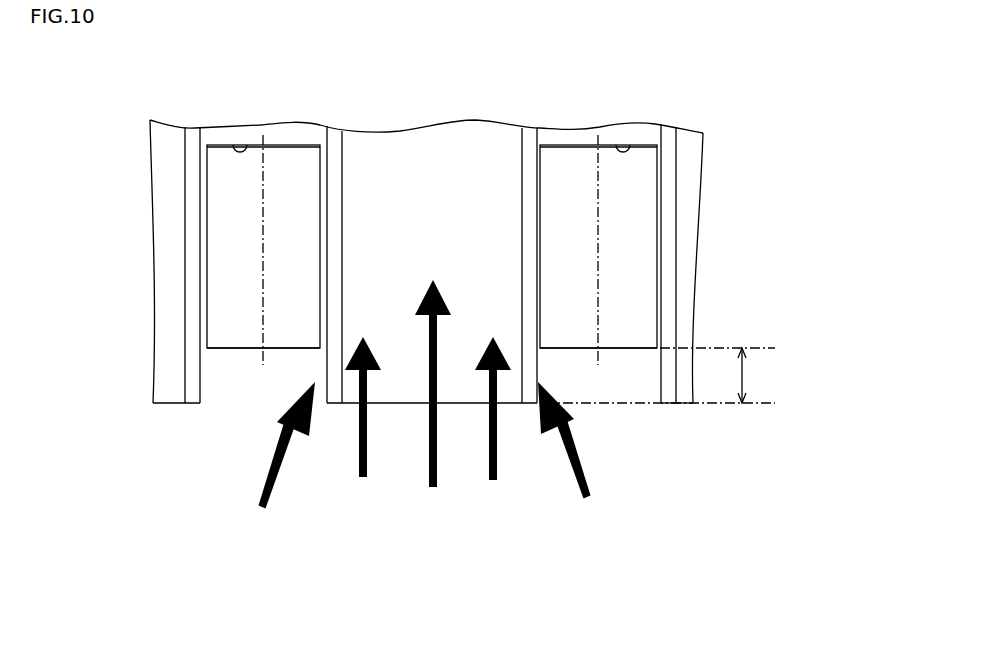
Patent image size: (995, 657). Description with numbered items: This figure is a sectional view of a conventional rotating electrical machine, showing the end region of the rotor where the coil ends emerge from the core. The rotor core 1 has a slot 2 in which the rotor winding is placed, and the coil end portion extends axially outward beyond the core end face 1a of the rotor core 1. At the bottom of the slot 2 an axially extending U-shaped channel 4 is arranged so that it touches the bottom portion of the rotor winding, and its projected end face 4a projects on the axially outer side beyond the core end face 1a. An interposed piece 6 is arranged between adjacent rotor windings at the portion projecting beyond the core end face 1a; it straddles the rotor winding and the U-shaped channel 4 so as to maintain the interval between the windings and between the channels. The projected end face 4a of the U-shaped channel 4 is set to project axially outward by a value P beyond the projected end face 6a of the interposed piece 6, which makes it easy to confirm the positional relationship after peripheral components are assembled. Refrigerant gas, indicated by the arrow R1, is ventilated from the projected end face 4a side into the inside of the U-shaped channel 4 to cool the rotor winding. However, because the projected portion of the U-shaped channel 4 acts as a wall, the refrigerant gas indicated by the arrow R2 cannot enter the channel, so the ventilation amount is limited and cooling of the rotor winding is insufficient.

The rotor core 1 is at (580, 130).
The core end face 1a is at (252, 138).
The slot 2 is at (195, 128).
The U-shaped channel 4 is at (157, 314).
The projected end face 4a is at (162, 403).
The interposed piece 6 is at (243, 295).
The projected end face 6a is at (243, 350).
The arrow R1 is at (488, 450).
The arrow R2 is at (283, 460).
The value P is at (660, 375).